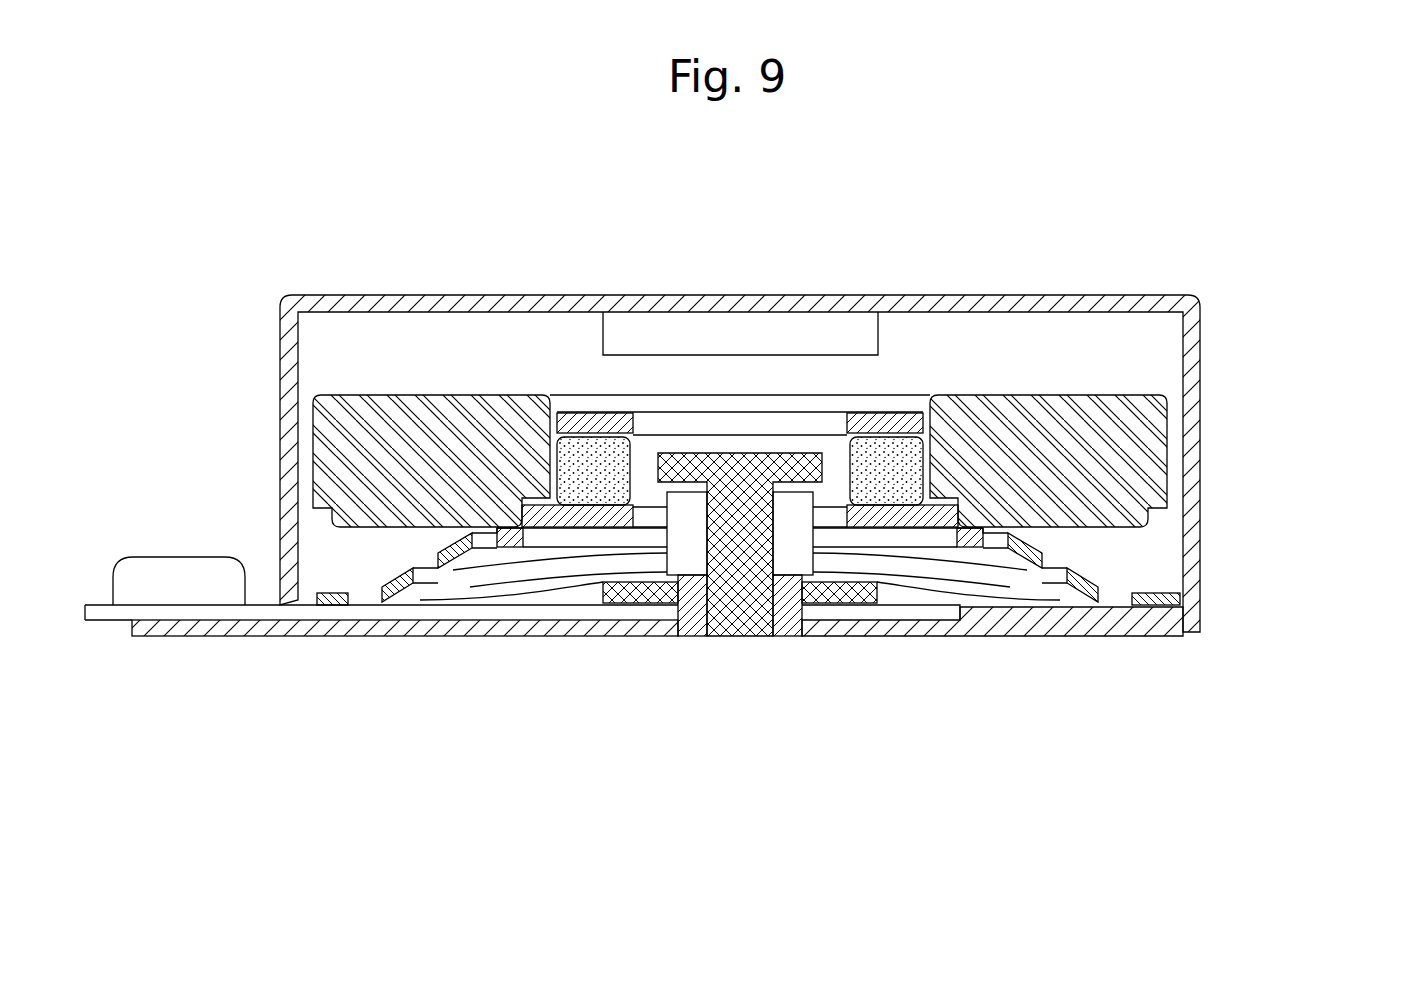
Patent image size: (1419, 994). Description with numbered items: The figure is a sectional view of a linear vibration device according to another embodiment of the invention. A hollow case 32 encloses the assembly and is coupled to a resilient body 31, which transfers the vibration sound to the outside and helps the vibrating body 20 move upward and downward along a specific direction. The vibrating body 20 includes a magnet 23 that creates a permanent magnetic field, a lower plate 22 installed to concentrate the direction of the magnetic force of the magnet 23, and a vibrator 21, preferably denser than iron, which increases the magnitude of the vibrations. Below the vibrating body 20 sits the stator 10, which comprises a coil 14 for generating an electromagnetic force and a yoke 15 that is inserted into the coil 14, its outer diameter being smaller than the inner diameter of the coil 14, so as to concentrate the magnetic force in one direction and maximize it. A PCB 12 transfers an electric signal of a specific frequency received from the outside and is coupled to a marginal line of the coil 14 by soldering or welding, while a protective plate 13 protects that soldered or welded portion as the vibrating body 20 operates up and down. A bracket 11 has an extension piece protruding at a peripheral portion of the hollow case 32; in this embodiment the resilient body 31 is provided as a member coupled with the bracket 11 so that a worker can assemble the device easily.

The stator 10 is at (634, 642).
The bracket 11 is at (365, 637).
The PCB 12 is at (468, 640).
The protective plate 13 is at (787, 327).
The coil 14 is at (661, 640).
The yoke 15 is at (731, 607).
The vibrating body 20 is at (858, 477).
The vibrator 21 is at (1087, 414).
The lower plate 22 is at (907, 462).
The magnet 23 is at (957, 492).
The resilient body 31 is at (1015, 572).
The hollow case 32 is at (1077, 305).